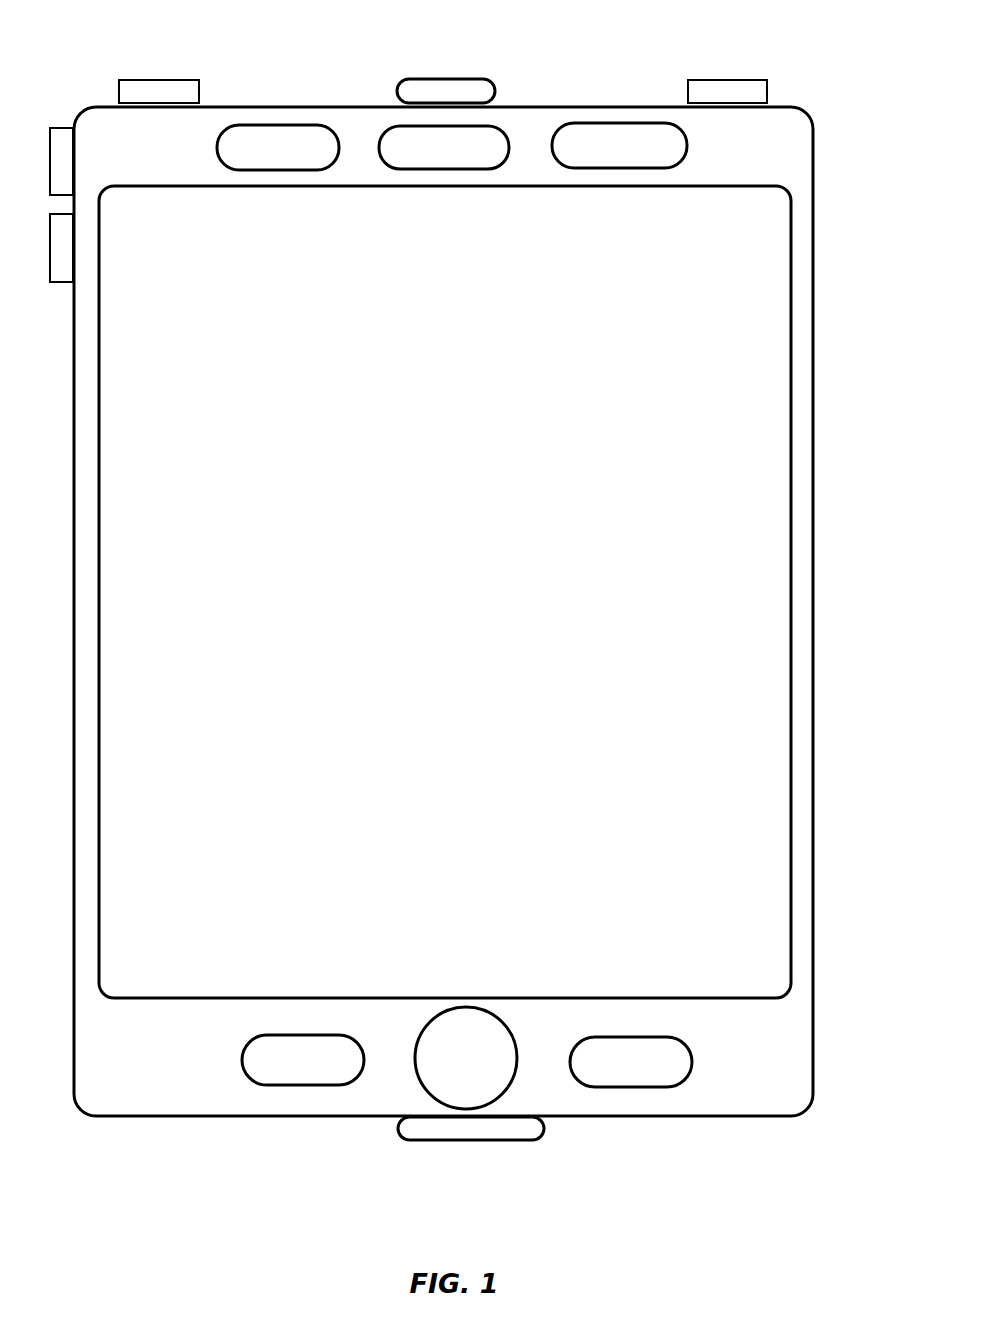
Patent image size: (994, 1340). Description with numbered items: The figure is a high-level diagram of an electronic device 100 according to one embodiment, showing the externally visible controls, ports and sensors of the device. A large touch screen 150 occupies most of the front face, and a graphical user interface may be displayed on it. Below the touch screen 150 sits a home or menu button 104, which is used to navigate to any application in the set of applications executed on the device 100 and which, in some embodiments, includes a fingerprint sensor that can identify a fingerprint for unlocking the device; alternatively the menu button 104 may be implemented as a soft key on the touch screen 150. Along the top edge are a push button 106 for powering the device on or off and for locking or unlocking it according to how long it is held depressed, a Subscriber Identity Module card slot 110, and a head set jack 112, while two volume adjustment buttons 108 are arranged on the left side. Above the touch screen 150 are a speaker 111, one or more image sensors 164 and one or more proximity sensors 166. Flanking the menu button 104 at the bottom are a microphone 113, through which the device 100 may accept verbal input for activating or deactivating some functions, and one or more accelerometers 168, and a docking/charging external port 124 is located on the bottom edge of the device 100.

The electronic device 100 is at (846, 108).
The menu button 104 is at (466, 1058).
The push button 106 is at (159, 91).
The volume adjustment buttons 108 is at (61, 205).
The Subscriber Identity Module (SIM) card slot 110 is at (446, 91).
The speaker 111 is at (278, 147).
The head set jack 112 is at (727, 91).
The microphone 113 is at (303, 1060).
The docking/charging external port 124 is at (471, 1128).
The touch screen 150 is at (791, 483).
The image sensors 164 is at (444, 147).
The proximity sensors 166 is at (619, 145).
The accelerometers 168 is at (631, 1062).